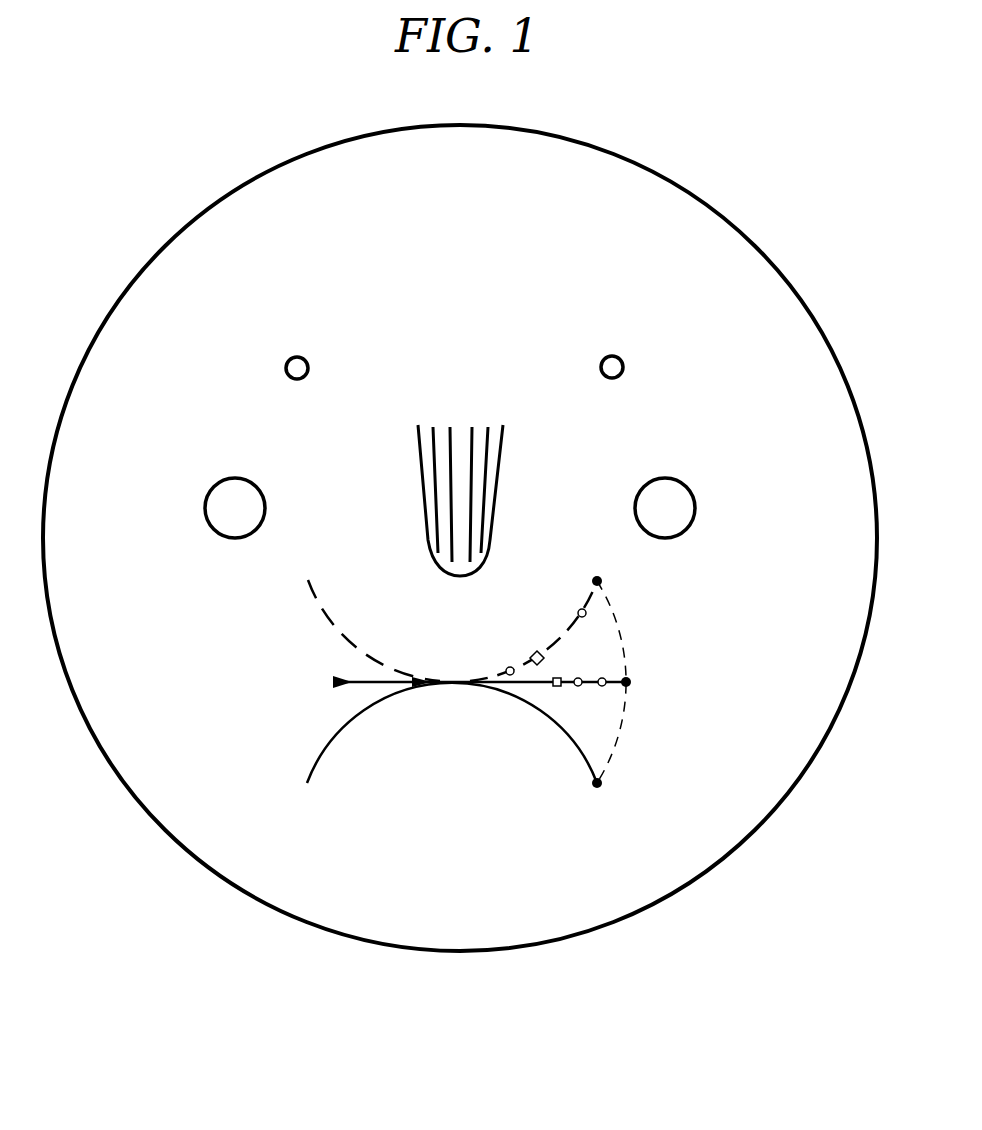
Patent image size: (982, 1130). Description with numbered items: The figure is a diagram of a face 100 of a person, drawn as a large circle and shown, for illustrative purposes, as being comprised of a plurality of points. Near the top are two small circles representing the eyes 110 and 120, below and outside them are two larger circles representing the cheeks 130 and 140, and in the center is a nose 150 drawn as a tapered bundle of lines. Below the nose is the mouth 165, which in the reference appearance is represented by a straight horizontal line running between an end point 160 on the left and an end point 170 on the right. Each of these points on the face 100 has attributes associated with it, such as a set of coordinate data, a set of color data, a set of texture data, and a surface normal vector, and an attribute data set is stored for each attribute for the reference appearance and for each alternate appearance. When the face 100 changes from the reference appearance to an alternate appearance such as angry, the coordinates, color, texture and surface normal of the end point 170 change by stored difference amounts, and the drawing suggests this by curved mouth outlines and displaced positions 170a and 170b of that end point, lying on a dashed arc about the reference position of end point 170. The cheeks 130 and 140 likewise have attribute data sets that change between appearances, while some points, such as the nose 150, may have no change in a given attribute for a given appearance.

The face 100 is at (678, 180).
The eye 110 is at (290, 357).
The eye 120 is at (609, 356).
The cheek 130 is at (236, 477).
The cheek 140 is at (664, 477).
The nose 150 is at (460, 402).
The end point 160 is at (332, 683).
The mouth 165 is at (460, 686).
The end point 170 is at (629, 681).
The upper arc endpoint 170a is at (600, 579).
The lower arc endpoint 170b is at (600, 786).